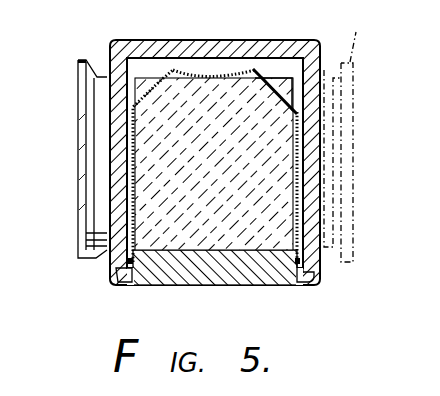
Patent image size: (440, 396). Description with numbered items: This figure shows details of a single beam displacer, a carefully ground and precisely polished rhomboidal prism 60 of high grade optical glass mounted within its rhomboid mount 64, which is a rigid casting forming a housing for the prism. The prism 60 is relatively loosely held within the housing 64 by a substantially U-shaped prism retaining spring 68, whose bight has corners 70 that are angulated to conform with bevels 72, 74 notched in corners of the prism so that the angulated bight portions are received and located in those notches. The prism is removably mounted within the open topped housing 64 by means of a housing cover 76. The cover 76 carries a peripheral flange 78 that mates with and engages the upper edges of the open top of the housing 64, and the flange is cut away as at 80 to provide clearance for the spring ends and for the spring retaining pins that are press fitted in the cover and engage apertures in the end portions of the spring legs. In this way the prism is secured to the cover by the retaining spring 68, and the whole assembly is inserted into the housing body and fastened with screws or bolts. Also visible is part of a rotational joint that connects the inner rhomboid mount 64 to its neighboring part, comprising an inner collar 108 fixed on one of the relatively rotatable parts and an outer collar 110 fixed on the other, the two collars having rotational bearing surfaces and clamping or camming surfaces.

The rhomboidal prism 60 is at (140, 186).
The rhomboid mount 64 is at (310, 212).
The prism retaining spring 68 is at (297, 167).
The corners of the spring bight 70 is at (266, 74).
The bevel 72 is at (292, 97).
The bevel 74 is at (158, 88).
The housing cover 76 is at (244, 286).
The peripheral flange 78 is at (316, 281).
The cut away 80 is at (121, 284).
The inner collar 108 is at (79, 58).
The outer collar 110 is at (356, 31).